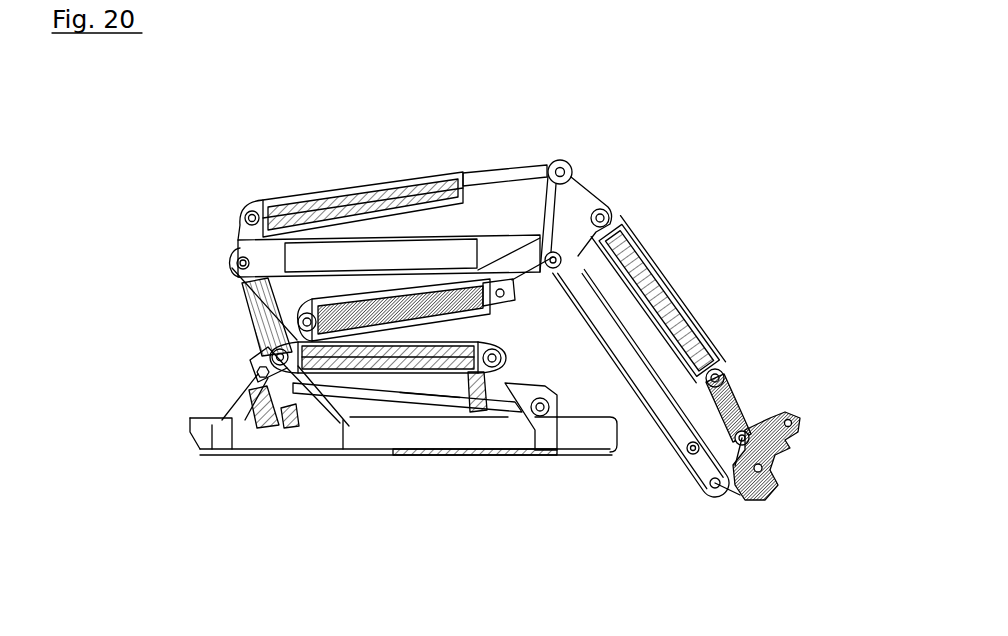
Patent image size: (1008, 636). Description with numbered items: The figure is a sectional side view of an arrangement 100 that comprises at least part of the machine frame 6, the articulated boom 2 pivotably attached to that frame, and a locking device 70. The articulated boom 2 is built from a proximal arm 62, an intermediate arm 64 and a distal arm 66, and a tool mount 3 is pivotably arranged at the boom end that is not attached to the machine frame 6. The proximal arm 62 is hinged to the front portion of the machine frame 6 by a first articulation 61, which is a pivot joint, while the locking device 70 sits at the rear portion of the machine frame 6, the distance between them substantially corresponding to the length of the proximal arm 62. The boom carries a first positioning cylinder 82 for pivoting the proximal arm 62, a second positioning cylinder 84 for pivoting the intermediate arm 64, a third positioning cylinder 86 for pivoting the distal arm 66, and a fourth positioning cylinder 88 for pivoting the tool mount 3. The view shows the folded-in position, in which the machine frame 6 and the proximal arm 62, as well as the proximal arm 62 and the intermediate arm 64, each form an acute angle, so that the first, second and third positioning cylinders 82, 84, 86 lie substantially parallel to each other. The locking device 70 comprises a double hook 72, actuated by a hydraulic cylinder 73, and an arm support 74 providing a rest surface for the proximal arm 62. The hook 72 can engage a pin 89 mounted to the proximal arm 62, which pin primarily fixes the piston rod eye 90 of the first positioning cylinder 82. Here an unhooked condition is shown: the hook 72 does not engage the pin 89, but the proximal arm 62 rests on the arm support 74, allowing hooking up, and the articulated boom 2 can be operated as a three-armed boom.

The arrangement 100 is at (252, 126).
The articulated boom 2 is at (428, 388).
The tool mount 3 is at (762, 469).
The machine frame 6 is at (586, 440).
The first articulation 61 is at (538, 410).
The proximal arm 62 is at (378, 384).
The intermediate arm 64 is at (395, 235).
The distal arm 66 is at (675, 445).
The locking device 70 is at (203, 373).
The double hook 72 is at (261, 374).
The hydraulic cylinder 73 is at (277, 404).
The arm support 74 is at (337, 430).
The first positioning cylinder 82 is at (328, 358).
The second positioning cylinder 84 is at (465, 297).
The third positioning cylinder 86 is at (337, 207).
The fourth positioning cylinder 88 is at (663, 298).
The pin 89 is at (273, 352).
The piston rod eye 90 is at (290, 353).